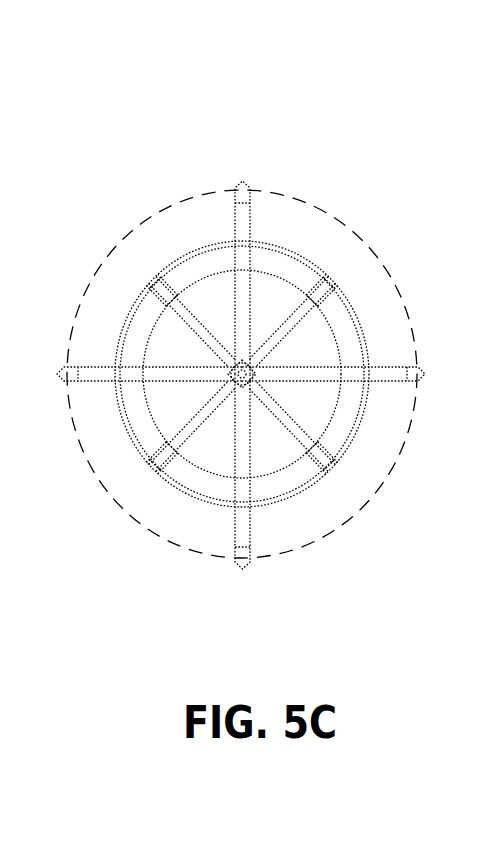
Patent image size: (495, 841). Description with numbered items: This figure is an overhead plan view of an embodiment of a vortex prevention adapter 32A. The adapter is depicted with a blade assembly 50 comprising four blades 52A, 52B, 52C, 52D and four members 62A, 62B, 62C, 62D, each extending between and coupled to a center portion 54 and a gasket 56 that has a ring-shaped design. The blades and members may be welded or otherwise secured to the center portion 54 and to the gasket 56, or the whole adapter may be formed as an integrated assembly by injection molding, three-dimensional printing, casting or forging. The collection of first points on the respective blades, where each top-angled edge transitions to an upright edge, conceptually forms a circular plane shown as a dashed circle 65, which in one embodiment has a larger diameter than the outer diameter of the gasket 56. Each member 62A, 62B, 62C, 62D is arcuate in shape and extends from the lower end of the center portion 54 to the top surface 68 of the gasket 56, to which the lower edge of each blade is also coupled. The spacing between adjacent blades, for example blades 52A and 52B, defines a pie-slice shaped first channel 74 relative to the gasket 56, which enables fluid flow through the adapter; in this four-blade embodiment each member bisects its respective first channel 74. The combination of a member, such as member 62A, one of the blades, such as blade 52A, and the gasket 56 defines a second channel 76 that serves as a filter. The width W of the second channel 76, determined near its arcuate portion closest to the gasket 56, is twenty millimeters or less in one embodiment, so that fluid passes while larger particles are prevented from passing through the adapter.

The vortex prevention adapter 32A is at (195, 118).
The blade assembly 50 is at (97, 210).
The blade 52A is at (392, 372).
The blade 52B is at (93, 377).
The blade 52C is at (248, 535).
The blade 52D is at (246, 224).
The center portion 54 is at (240, 370).
The gasket 56 is at (140, 450).
The member 62A is at (285, 413).
The member 62B is at (183, 447).
The member 62C is at (182, 320).
The member 62D is at (275, 342).
The dashed circle 65 is at (347, 228).
The top surface 68 is at (285, 480).
The first channel 74 is at (317, 340).
The second channel 76 is at (302, 397).
The width W is at (303, 450).